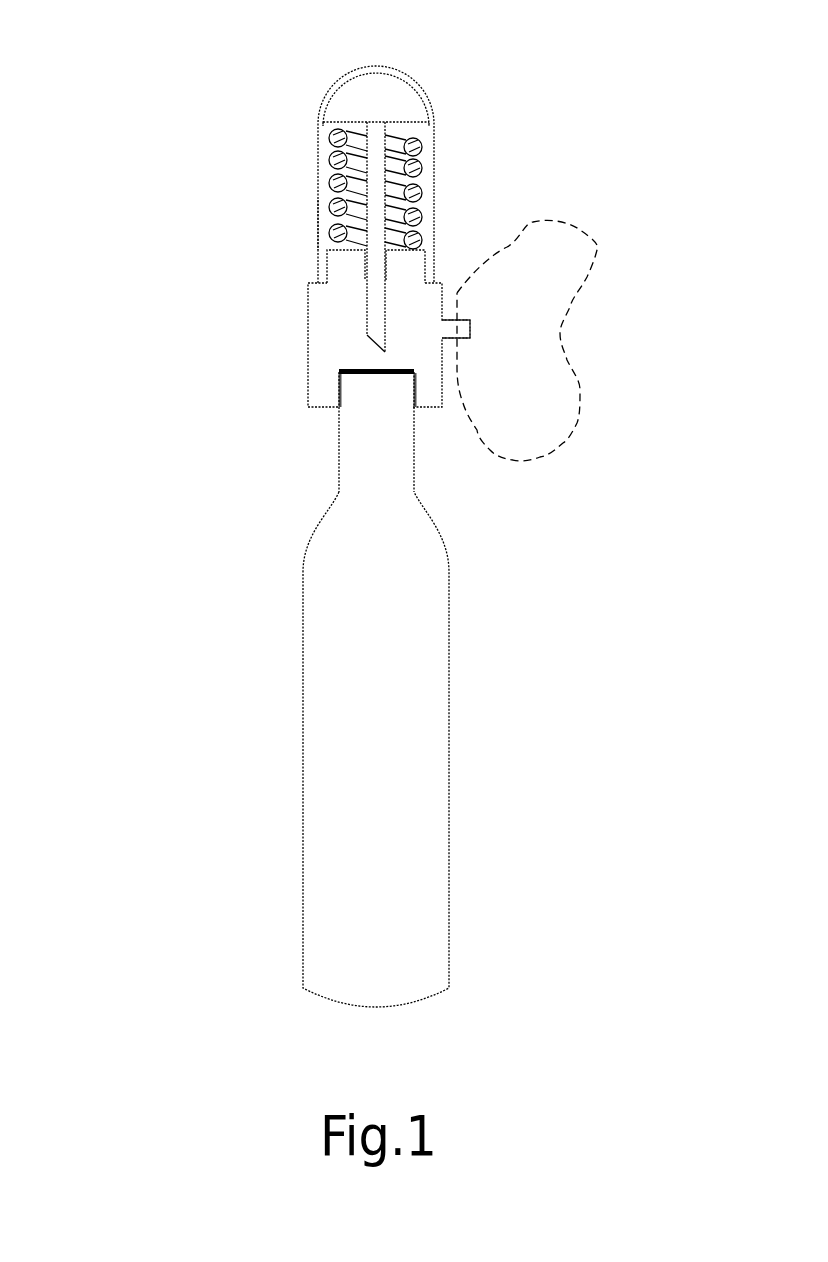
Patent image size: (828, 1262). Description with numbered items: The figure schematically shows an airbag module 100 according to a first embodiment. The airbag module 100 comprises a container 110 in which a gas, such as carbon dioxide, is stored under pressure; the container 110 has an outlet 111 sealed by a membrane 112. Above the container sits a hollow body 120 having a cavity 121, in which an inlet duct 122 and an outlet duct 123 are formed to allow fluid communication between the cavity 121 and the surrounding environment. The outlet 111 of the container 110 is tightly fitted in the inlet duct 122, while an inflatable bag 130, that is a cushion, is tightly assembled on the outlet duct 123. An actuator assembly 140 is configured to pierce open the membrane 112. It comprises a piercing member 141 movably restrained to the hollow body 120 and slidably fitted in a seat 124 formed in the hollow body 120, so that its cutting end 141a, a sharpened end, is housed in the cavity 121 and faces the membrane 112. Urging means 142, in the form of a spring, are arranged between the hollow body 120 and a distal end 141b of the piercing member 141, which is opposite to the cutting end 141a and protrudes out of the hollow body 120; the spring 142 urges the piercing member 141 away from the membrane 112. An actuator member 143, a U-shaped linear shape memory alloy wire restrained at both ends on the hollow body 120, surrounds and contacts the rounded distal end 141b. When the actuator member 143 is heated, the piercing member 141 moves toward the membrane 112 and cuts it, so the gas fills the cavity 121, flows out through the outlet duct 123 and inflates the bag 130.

The airbag module 100 is at (370, 511).
The container 110 is at (303, 665).
The outlet 111 is at (338, 412).
The membrane 112 is at (368, 375).
The hollow body 120 is at (308, 330).
The cavity 121 is at (355, 313).
The inlet duct 122 is at (337, 377).
The outlet duct 123 is at (472, 327).
The seat 124 is at (365, 261).
The inflatable bag 130 is at (598, 262).
The actuator assembly 140 is at (328, 174).
The piercing member 141 is at (375, 222).
The cutting end 141a is at (415, 332).
The distal end 141b is at (377, 100).
The urging means 142 is at (418, 167).
The actuator member 143 is at (318, 223).